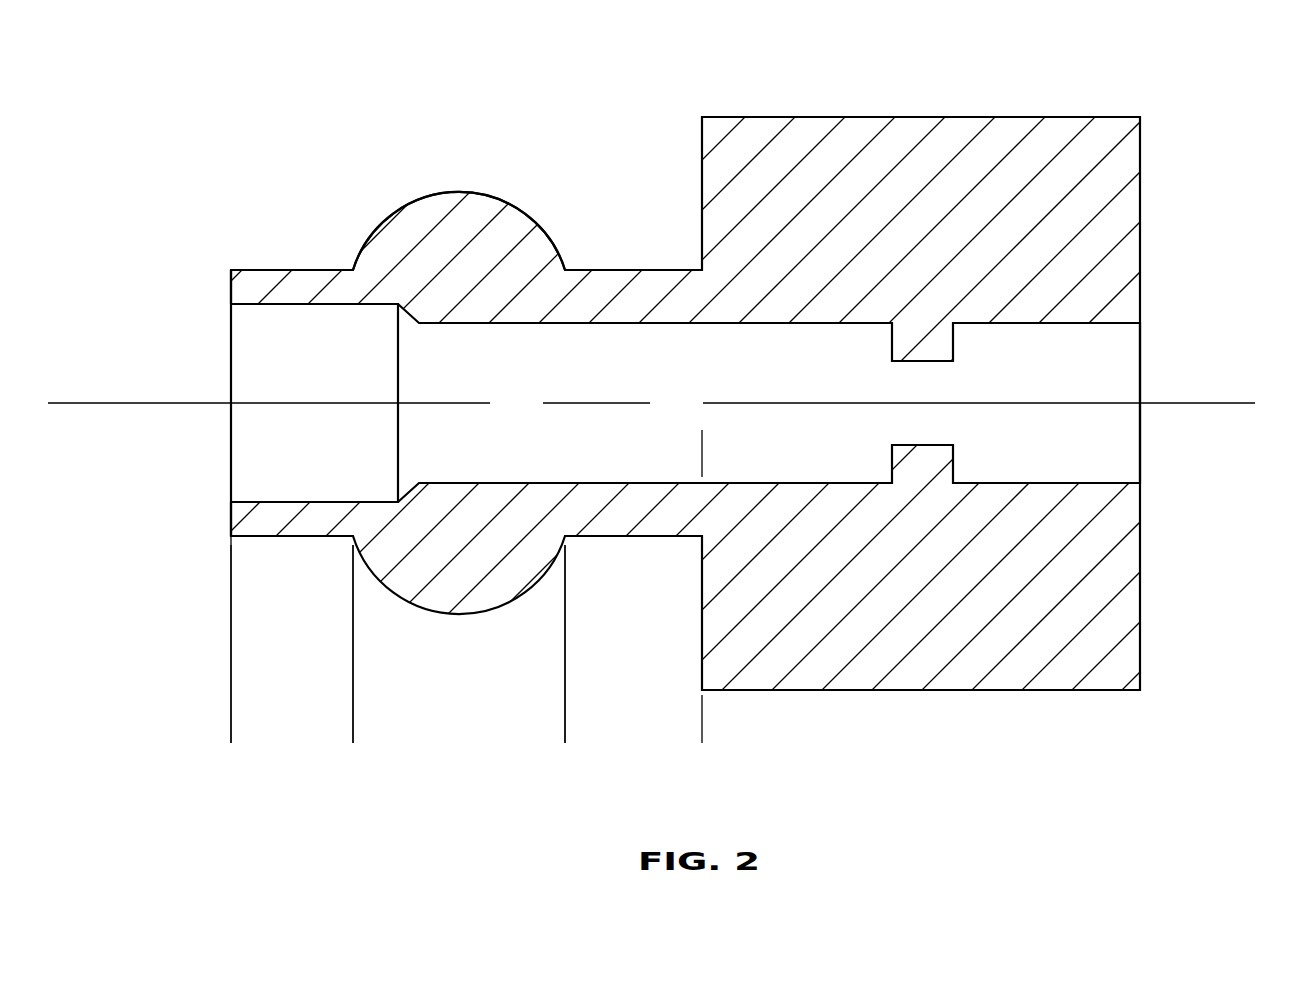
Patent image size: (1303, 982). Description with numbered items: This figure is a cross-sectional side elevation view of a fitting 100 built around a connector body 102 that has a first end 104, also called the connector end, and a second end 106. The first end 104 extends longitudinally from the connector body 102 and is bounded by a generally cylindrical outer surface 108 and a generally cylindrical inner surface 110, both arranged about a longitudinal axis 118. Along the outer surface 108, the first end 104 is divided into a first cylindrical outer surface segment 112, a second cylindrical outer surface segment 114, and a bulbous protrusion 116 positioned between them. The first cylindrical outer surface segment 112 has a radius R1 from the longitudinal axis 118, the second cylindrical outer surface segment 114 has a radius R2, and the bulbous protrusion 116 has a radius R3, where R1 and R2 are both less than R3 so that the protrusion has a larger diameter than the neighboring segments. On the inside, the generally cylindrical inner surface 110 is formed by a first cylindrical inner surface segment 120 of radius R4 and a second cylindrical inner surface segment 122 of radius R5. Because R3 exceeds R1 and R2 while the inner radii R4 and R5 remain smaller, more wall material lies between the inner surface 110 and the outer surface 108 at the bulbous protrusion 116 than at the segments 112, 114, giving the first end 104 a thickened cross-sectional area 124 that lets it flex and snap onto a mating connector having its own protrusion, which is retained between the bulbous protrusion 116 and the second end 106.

The fitting 100 is at (578, 115).
The connector body 102 is at (820, 116).
The first end 104 is at (253, 538).
The second end 106 is at (1012, 116).
The generally cylindrical outer surface 108 is at (588, 537).
The generally cylindrical inner surface 110 is at (866, 370).
The first cylindrical outer surface segment 112 is at (702, 733).
The second cylindrical outer surface segment 114 is at (353, 733).
The bulbous protrusion 116 is at (565, 733).
The longitudinal axis 118 is at (1180, 403).
The first cylindrical inner surface segment 120 is at (702, 461).
The second cylindrical inner surface segment 122 is at (398, 461).
The thickened cross-sectional area 124 is at (390, 248).
The radius of first cylindrical outer surface segment R1 is at (633, 403).
The radius of second cylindrical outer surface segment R2 is at (285, 403).
The radius of bulbous protrusion R3 is at (459, 403).
The radius of first cylindrical inner surface segment R4 is at (565, 335).
The radius of second cylindrical inner surface segment R5 is at (353, 316).